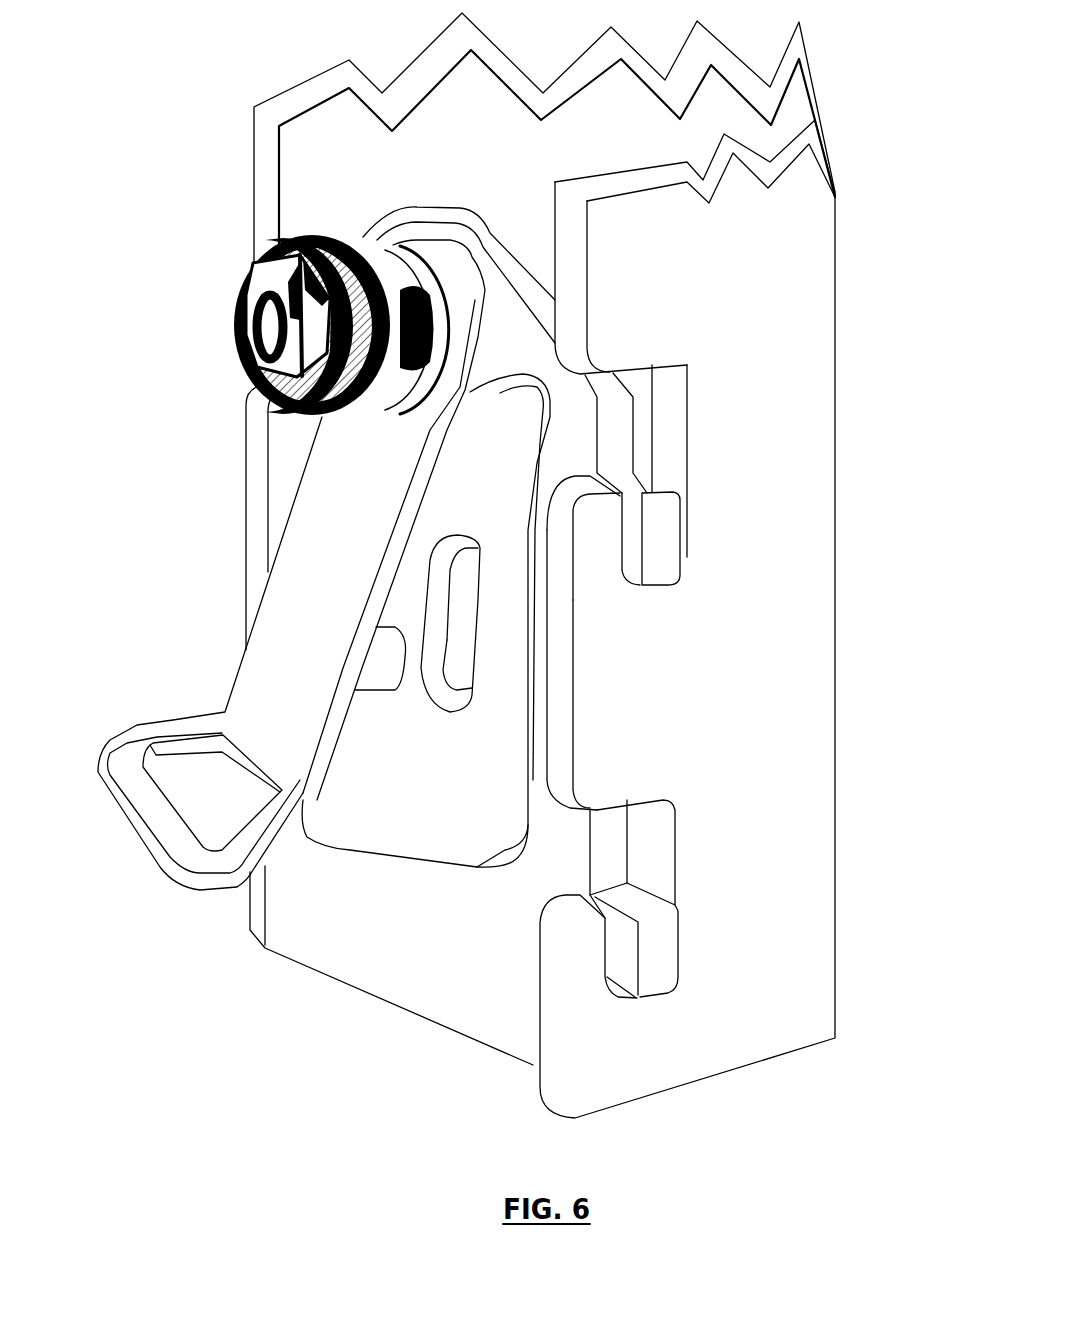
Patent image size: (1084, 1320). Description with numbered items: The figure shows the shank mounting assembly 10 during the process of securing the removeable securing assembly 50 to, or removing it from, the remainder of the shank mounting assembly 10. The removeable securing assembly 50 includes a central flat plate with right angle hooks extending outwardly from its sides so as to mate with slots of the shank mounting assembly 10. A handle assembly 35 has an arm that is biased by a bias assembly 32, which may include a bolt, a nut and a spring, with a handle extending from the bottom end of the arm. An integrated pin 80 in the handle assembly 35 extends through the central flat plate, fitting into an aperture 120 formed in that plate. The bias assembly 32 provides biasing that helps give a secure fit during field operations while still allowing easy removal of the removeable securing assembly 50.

The shank mounting assembly 10 is at (820, 252).
The removeable securing assembly 50 is at (548, 380).
The bias assembly 32 is at (430, 256).
The handle assembly 35 is at (118, 818).
The integrated pin 80 is at (378, 678).
The aperture 120 is at (458, 663).